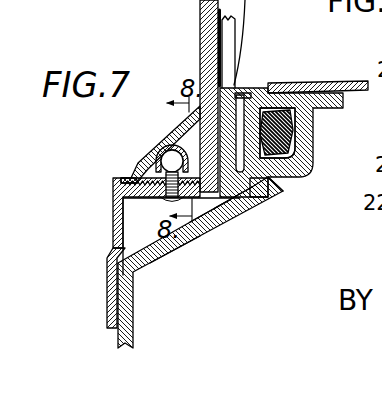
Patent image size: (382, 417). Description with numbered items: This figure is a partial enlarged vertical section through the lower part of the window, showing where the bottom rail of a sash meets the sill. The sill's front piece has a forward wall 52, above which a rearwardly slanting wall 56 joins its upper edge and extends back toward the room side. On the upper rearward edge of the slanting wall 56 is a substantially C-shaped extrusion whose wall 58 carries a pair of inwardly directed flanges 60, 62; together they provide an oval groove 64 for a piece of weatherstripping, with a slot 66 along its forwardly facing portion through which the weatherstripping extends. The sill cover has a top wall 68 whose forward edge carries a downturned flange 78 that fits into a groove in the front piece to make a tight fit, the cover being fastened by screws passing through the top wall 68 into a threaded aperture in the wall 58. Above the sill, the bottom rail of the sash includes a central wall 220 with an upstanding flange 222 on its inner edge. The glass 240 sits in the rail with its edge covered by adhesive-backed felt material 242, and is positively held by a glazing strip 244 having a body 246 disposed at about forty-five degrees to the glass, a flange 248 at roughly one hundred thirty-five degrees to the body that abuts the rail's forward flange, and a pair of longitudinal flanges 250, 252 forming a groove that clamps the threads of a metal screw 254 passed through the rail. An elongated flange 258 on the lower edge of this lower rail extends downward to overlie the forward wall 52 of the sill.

The forward wall 52 is at (133, 305).
The rearwardly slanting wall 56 is at (173, 253).
The wall 58 is at (312, 143).
The inwardly directed flange 60 is at (312, 113).
The inwardly directed flange 62 is at (266, 180).
The oval groove 64 is at (307, 155).
The slot 66 is at (236, 90).
The top wall 68 is at (312, 85).
The downturned flange 78 is at (258, 94).
The central wall 220 is at (208, 225).
The upstanding flange 222 is at (276, 190).
The glass 240 is at (203, 33).
The felt material 242 is at (180, 133).
The glazing strip 244 is at (163, 138).
The body 246 is at (167, 162).
The flange 248 is at (118, 177).
The longitudinally extending flange 250 is at (117, 210).
The longitudinally extending flange 252 is at (238, 208).
The metal screw 254 is at (160, 200).
The elongated flange 258 is at (107, 270).